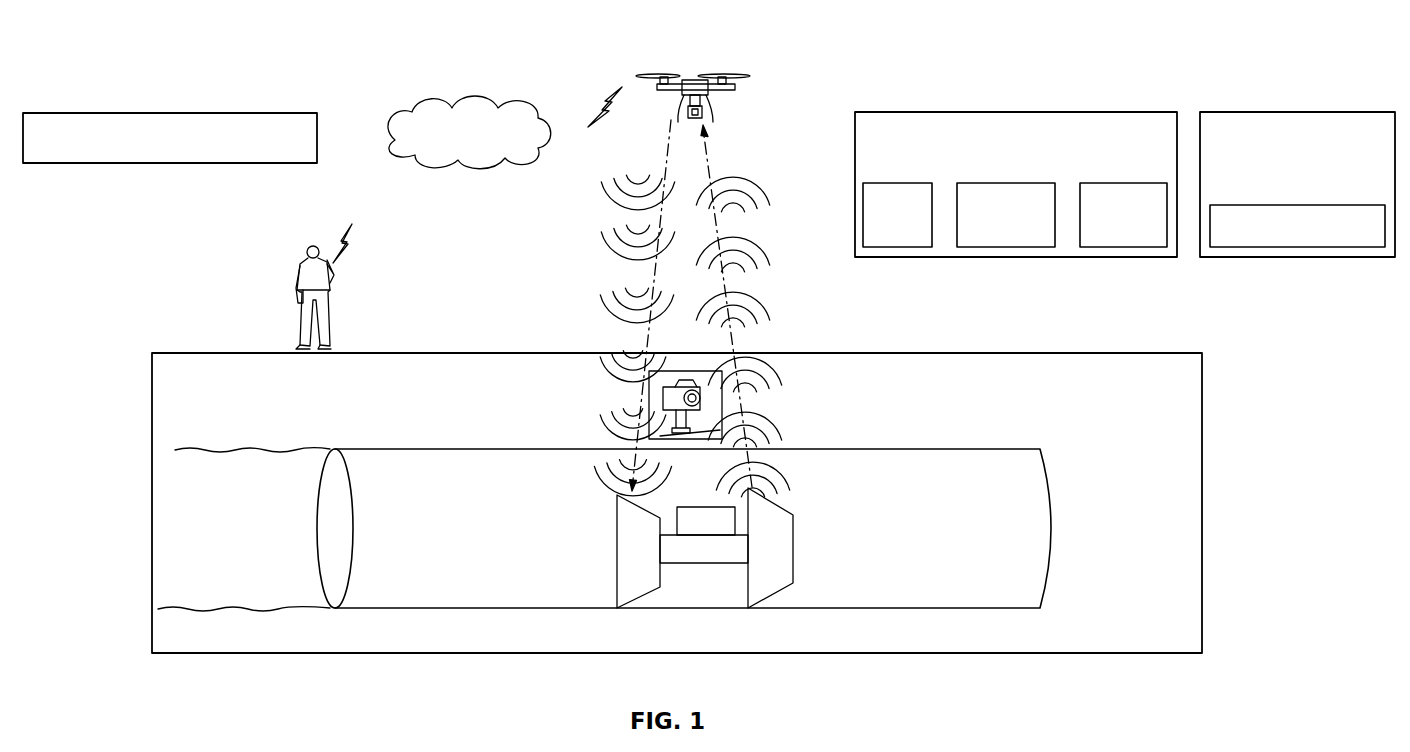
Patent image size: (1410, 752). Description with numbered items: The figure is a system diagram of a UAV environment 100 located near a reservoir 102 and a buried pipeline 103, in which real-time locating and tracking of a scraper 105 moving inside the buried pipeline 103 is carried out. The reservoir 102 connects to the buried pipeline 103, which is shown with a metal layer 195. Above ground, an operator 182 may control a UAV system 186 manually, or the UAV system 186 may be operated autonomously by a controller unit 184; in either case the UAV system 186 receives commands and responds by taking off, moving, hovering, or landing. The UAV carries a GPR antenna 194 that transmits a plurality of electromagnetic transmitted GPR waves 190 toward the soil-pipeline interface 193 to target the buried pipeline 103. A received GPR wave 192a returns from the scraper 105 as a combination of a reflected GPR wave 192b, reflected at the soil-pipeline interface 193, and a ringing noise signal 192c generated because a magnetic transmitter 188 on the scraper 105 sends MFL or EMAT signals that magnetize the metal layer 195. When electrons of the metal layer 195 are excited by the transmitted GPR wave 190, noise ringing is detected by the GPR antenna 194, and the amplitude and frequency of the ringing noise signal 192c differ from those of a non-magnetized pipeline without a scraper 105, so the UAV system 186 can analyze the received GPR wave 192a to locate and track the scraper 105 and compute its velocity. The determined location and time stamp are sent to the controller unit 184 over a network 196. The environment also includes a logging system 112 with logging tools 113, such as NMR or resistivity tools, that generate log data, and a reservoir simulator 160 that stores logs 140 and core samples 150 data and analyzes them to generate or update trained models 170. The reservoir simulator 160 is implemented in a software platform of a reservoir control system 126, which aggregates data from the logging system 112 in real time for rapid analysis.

The UAV environment 100 is at (1000, 44).
The reservoir 102 is at (244, 529).
The buried pipeline 103 is at (316, 530).
The scraper 105 is at (741, 542).
The logging system 112 is at (1297, 171).
The logging tools 113 is at (1267, 205).
The reservoir control system 126 is at (138, 113).
The logs 140 is at (921, 183).
The core samples 150 is at (1012, 183).
The reservoir simulator 160 is at (1016, 171).
The trained models 170 is at (1136, 183).
The operator 182 is at (296, 285).
The controller unit 184 is at (342, 232).
The UAV system 186 is at (685, 75).
The magnetic transmitter 188 is at (722, 505).
The transmitted GPR wave 190 is at (657, 270).
The received GPR wave 192a is at (742, 238).
The reflected GPR wave 192b is at (758, 297).
The ringing noise signal 192c is at (767, 462).
The soil-pipeline interface 193 is at (987, 351).
The GPR antenna 194 is at (712, 112).
The metal layer 195 is at (352, 447).
The network 196 is at (397, 113).